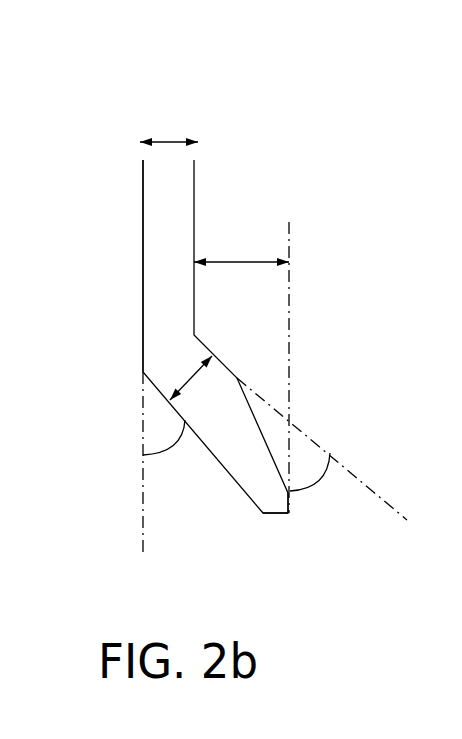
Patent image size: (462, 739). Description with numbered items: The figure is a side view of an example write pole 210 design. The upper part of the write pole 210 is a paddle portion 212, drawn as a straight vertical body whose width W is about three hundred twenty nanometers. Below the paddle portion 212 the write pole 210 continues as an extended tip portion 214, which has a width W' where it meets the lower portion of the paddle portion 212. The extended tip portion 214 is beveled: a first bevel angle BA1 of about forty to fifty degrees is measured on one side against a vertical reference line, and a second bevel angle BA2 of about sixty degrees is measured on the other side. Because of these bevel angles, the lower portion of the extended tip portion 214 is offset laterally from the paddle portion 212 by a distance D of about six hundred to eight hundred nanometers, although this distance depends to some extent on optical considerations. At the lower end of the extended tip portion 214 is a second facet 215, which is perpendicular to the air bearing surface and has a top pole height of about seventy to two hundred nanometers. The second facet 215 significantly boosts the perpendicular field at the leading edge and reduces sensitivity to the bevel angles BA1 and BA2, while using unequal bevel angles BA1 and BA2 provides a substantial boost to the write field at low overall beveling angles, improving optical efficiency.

The write pole 210 is at (313, 107).
The paddle portion 212 is at (143, 248).
The extended tip portion 214 is at (262, 511).
The second facet 215 is at (292, 500).
The width W is at (169, 126).
The distance D is at (241, 245).
The width W' is at (193, 380).
The first bevel angle BA1 is at (173, 451).
The second bevel angle BA2 is at (321, 484).